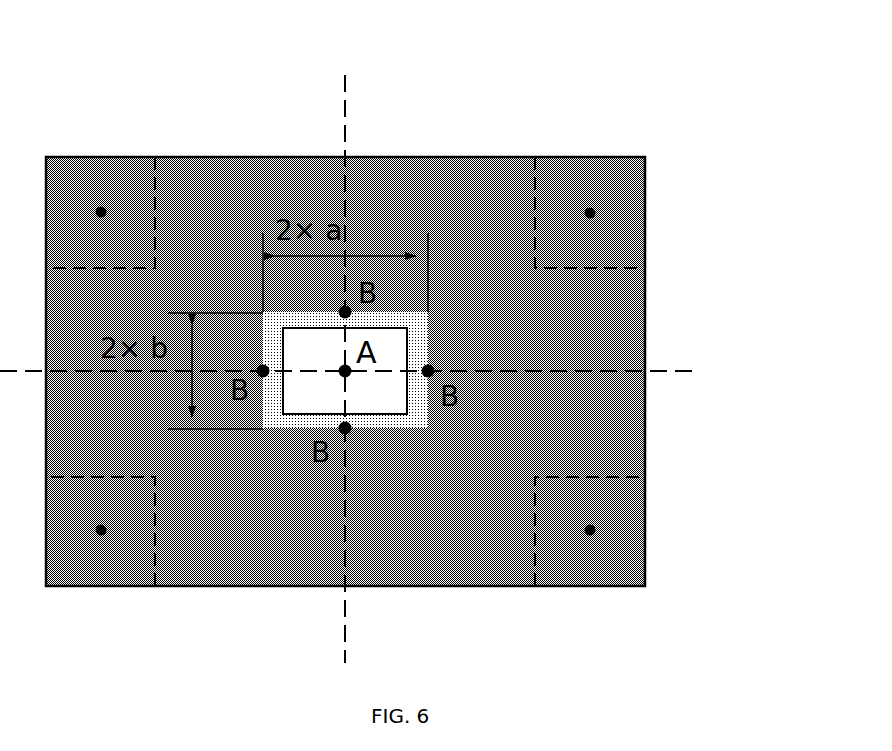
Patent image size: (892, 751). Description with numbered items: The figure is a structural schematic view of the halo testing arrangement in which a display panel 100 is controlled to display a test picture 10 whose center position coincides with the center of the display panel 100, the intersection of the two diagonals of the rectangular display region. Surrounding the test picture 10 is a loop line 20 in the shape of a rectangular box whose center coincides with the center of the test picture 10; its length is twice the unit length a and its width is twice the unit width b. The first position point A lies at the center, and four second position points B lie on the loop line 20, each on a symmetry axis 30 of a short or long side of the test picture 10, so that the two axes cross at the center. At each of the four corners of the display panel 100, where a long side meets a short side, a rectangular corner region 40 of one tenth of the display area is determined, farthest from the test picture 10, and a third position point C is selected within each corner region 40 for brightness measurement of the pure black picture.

The display panel 100 is at (500, 152).
The corner region 40 is at (162, 200).
The symmetry axis 30 is at (355, 118).
The loop line 20 is at (409, 436).
The test picture 10 is at (414, 348).